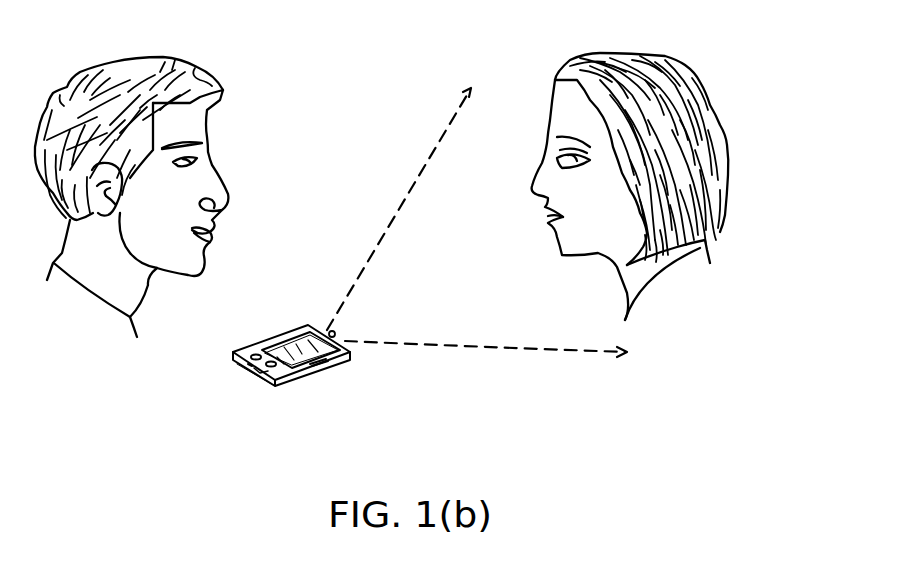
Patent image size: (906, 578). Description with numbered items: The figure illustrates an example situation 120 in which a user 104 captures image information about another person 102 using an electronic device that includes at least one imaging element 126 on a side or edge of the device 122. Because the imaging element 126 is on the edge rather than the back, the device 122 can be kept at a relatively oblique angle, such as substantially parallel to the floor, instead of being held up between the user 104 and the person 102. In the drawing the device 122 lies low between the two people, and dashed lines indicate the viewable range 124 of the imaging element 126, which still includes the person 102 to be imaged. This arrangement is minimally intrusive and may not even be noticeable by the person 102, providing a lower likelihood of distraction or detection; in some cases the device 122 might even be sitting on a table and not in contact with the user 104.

The example situation 120 is at (778, 90).
The user 104 is at (88, 323).
The person 102 is at (643, 323).
The device 122 is at (310, 367).
The viewable range 124 is at (370, 266).
The imaging element 126 is at (336, 331).